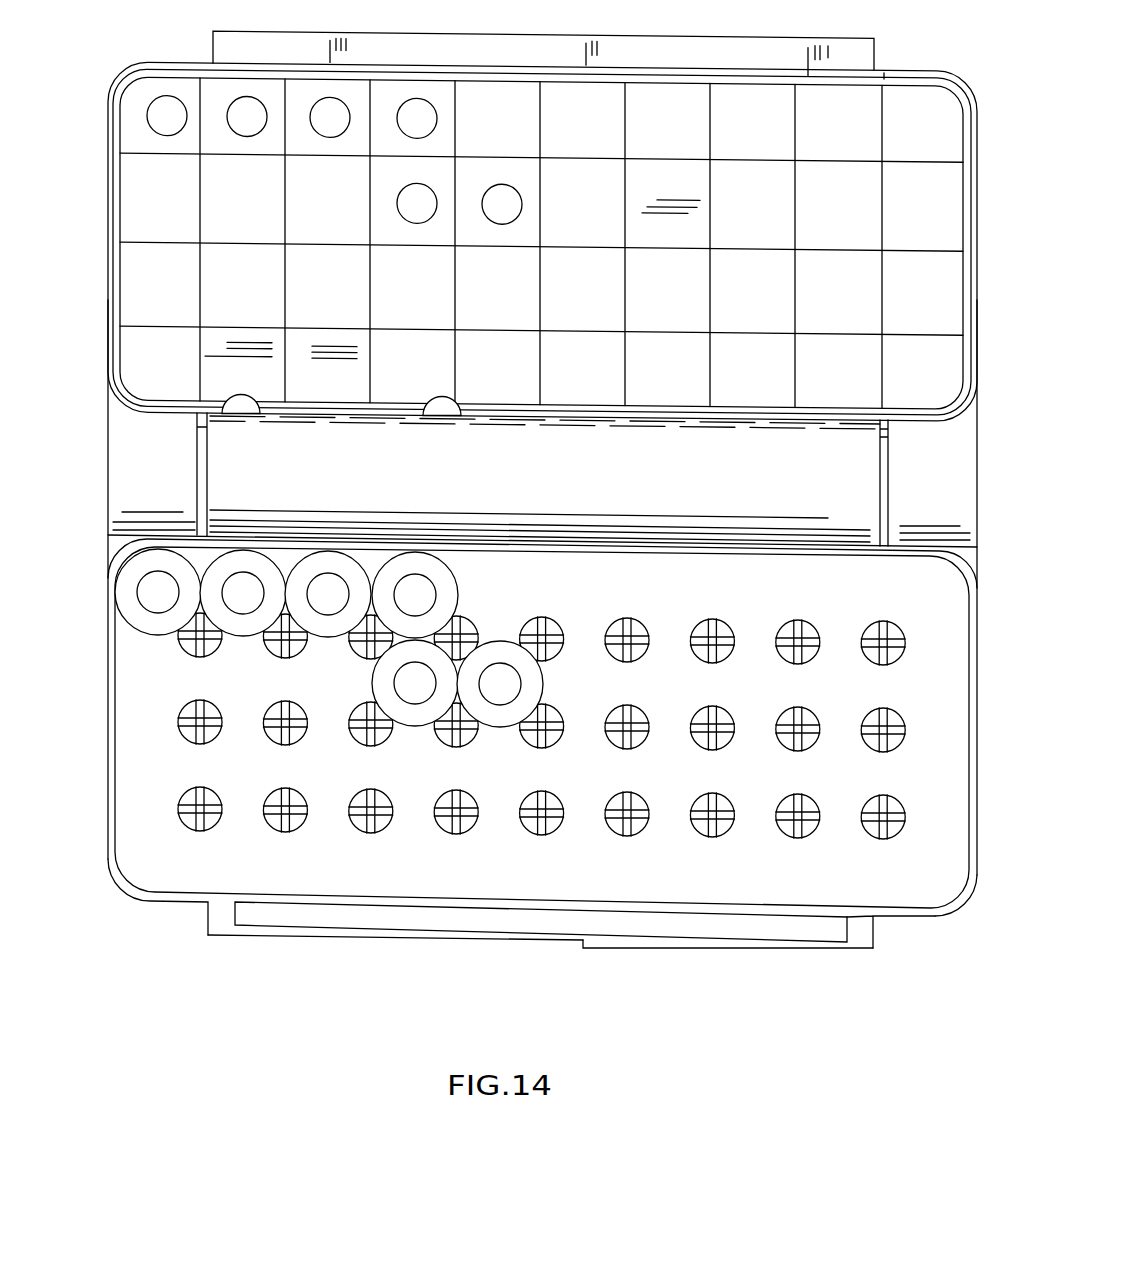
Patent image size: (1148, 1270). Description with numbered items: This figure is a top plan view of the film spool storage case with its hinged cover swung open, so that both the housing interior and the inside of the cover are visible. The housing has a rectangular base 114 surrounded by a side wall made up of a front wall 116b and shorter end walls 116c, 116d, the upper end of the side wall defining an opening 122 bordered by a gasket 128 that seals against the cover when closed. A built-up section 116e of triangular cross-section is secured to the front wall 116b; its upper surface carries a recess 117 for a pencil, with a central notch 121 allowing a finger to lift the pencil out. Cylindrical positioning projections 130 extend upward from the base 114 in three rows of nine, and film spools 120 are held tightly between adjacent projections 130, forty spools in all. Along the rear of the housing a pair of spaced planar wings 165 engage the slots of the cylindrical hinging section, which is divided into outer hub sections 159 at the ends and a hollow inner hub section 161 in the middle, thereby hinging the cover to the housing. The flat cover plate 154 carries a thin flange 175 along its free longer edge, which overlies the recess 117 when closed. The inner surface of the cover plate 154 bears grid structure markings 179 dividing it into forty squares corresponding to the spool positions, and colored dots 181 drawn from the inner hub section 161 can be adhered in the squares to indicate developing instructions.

The base 114 is at (546, 765).
The front wall 116b is at (879, 918).
The end wall 116c is at (976, 850).
The end wall 116d is at (113, 878).
The built-up section 116e is at (777, 950).
The recess 117 is at (647, 949).
The film spools 120 is at (459, 592).
The notch 121 is at (496, 940).
The opening 122 is at (906, 899).
The gasket 128 is at (893, 90).
The positioning projections 130 is at (368, 812).
The cover plate 154 is at (884, 73).
The outer hub sections 159 is at (184, 464).
The inner hub section 161 is at (868, 497).
The wings 165 is at (200, 487).
The flange 175 is at (538, 45).
The grid structure markings 179 is at (912, 138).
The colored dots 181 is at (418, 99).